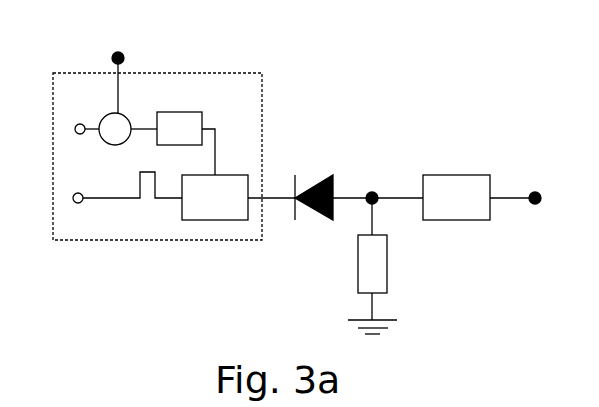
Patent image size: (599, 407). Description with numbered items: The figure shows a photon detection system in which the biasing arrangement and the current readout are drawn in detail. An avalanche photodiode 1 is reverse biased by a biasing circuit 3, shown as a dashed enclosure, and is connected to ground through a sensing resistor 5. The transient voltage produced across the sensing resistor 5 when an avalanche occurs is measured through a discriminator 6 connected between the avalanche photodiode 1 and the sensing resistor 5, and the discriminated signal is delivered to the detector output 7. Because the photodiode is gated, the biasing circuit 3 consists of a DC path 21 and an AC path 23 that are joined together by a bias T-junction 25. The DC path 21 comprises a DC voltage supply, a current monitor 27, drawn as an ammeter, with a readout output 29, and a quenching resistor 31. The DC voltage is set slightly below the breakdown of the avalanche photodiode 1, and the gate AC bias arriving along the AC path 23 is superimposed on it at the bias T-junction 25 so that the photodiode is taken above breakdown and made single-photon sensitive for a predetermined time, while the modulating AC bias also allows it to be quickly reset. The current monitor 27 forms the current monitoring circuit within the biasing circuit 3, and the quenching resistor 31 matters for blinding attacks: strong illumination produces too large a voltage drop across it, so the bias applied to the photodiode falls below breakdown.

The avalanche photodiode 1 is at (313, 175).
The biasing circuit 3 is at (133, 253).
The sensing resistor 5 is at (380, 267).
The discriminator 6 is at (455, 174).
The detector output 7 is at (537, 190).
The DC path 21 is at (69, 127).
The AC path 23 is at (65, 203).
The bias T-junction 25 is at (213, 225).
The current monitor 27 is at (110, 110).
The readout output 29 is at (126, 53).
The quenching resistor 31 is at (193, 106).